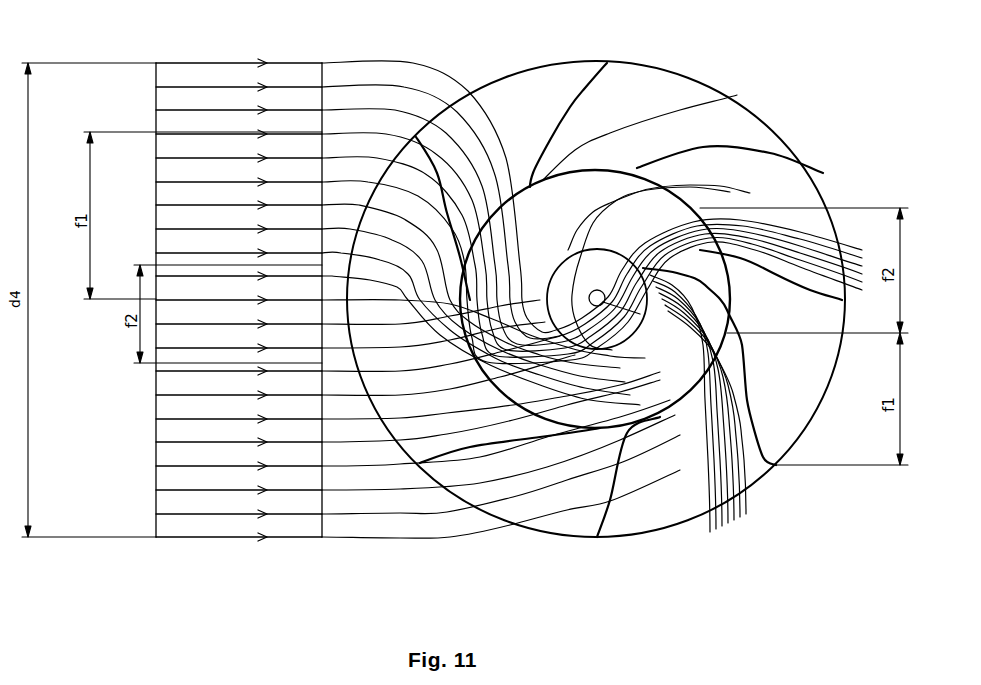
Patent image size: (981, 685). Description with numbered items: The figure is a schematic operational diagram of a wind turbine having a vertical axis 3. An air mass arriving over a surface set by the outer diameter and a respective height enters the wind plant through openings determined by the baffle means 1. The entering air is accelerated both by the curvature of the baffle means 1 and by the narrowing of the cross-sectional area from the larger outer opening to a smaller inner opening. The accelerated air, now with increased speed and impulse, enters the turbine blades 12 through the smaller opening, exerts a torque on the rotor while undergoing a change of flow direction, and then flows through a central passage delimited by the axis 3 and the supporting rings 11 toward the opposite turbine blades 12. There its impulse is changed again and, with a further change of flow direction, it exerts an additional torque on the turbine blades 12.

The baffle means 1 is at (570, 107).
The vertical axis 3 is at (655, 395).
The supporting rings 11 is at (707, 410).
The turbine blades 12 is at (720, 240).